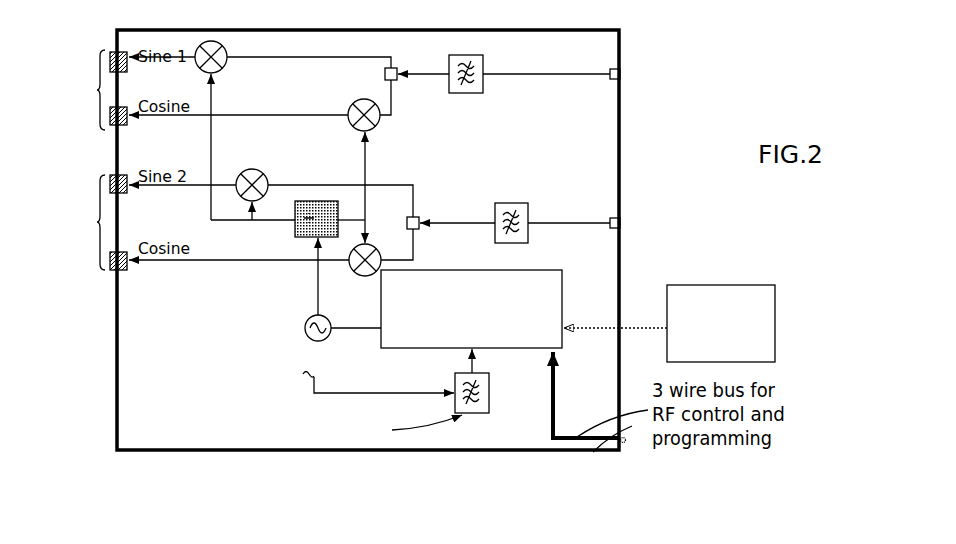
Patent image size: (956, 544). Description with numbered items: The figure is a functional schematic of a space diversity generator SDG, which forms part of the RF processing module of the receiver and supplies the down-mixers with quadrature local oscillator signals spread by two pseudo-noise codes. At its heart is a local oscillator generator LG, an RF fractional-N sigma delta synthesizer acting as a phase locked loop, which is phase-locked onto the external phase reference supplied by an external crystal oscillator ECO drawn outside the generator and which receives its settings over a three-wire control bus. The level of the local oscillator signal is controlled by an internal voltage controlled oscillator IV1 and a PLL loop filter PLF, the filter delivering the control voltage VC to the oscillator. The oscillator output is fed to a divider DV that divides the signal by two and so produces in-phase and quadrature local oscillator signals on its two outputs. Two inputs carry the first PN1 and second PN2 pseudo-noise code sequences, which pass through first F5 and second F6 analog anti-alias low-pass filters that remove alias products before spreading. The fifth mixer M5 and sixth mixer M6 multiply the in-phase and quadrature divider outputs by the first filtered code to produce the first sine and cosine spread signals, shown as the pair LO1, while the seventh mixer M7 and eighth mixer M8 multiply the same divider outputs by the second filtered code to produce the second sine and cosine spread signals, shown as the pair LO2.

The space diversity generator SDG is at (117, 370).
The first local oscillator output (sine/cosine) LO1 is at (83, 90).
The second local oscillator output (sine/cosine) LO2 is at (83, 222).
The fifth mixer M5 is at (220, 43).
The sixth mixer M6 is at (376, 127).
The seventh mixer M7 is at (257, 170).
The eighth mixer M8 is at (357, 271).
The divider DV is at (325, 200).
The internal voltage control oscillator IV1 is at (305, 324).
The control voltage VC is at (377, 367).
The local oscillator generator LG is at (545, 270).
The PLL loop filter PLF is at (481, 414).
The first filter F5 is at (483, 92).
The second filter F6 is at (509, 203).
The first digital pseudo-noise code sequence PN1 is at (581, 82).
The second digital pseudo-noise code sequence PN2 is at (604, 221).
The external crystal oscillator ECO is at (690, 285).